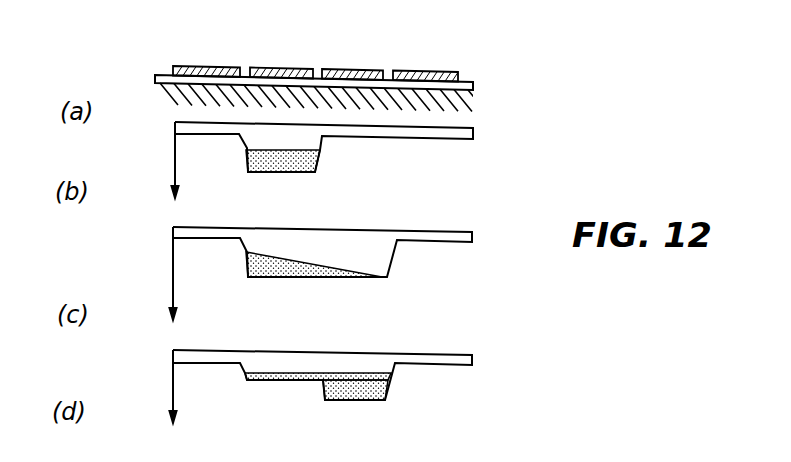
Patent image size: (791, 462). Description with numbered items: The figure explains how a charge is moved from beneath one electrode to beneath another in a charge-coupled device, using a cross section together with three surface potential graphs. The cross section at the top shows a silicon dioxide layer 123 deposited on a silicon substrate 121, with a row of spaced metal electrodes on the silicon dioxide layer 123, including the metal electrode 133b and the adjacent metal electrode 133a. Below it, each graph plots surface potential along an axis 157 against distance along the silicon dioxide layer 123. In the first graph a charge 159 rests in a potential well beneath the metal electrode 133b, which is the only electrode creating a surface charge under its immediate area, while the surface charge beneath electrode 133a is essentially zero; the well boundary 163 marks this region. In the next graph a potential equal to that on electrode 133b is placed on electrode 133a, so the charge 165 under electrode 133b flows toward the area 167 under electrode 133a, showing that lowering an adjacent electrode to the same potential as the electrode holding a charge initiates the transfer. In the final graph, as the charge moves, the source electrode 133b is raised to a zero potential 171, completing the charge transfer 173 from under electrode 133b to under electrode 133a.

The silicon substrate 121 is at (173, 98).
The silicon dioxide layer 123 is at (156, 80).
The metal electrode 133a is at (369, 68).
The metal electrode 133b is at (290, 67).
The axis 157 is at (175, 162).
The charge 159 is at (310, 153).
The recess in layer 163 is at (325, 142).
The charge 165 is at (311, 256).
The area 167 is at (370, 273).
The zero potential 171 is at (290, 380).
The charge transfer 173 is at (387, 402).